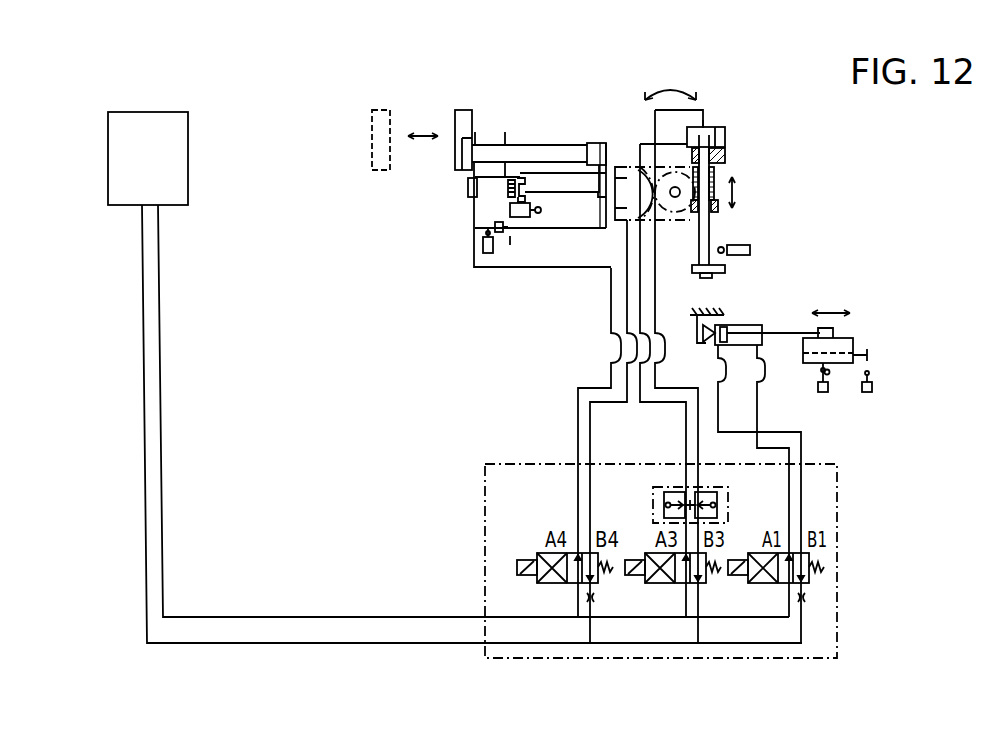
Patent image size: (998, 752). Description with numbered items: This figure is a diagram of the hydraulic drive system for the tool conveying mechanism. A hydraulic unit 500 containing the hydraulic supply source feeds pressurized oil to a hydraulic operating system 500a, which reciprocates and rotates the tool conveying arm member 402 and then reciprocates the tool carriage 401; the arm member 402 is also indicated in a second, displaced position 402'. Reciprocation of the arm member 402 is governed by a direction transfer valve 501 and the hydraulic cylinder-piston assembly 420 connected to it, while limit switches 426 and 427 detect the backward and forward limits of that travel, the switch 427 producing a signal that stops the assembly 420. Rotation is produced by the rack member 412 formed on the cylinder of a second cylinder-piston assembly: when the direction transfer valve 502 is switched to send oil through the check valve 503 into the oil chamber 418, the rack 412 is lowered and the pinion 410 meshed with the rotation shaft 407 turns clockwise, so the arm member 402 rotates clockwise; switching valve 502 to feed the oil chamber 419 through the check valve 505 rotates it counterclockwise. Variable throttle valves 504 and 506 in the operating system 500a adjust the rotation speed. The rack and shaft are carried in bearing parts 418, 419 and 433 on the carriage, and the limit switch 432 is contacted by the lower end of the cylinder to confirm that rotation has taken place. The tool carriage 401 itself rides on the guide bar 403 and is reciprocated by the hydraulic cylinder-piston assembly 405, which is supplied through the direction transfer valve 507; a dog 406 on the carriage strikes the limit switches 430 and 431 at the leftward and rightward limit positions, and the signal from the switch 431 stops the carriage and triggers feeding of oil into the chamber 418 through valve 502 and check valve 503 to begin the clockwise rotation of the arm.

The hydraulic unit 500 is at (148, 125).
The hydraulic operating system 500a is at (925, 614).
The direction transfer valve 501 is at (543, 553).
The direction transfer valve 502 is at (649, 576).
The check valve 503 is at (662, 492).
The variable throttle valve 504 is at (676, 492).
The check valve 505 is at (717, 500).
The variable throttle valve 506 is at (700, 492).
The direction transfer valve 507 is at (752, 553).
The tool conveying arm member 402 is at (554, 137).
The rack slide alternate position 402' is at (361, 112).
The rotation shaft 407 is at (546, 150).
The pinion 410 is at (663, 198).
The rack member 412 is at (718, 169).
The oil chamber 418 is at (714, 172).
The oil chamber 419 is at (721, 200).
The hydraulic cylinder-piston assembly 420 is at (484, 188).
The limit switch 426 is at (489, 256).
The limit switch 427 is at (521, 216).
The limit switch 432 is at (751, 251).
The bearing housing 433 is at (718, 128).
The hydraulic cylinder-piston assembly 405 is at (741, 326).
The tool carriage 401 is at (841, 344).
The guide bar 403 is at (869, 356).
The limit switch 430 is at (818, 388).
The dog 406 is at (830, 375).
The limit switch 431 is at (872, 393).